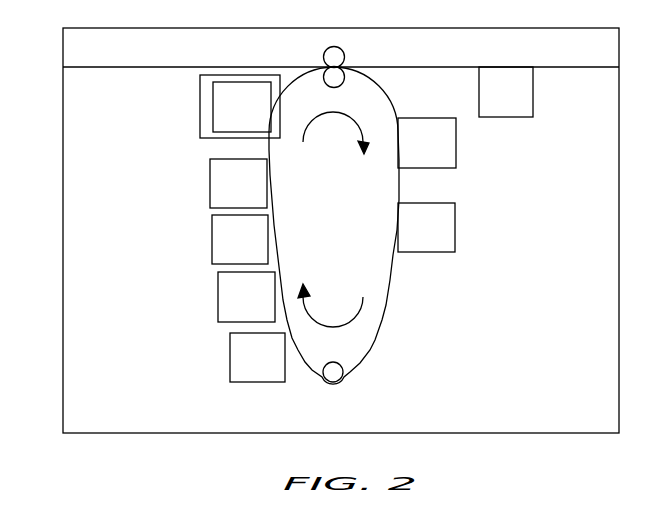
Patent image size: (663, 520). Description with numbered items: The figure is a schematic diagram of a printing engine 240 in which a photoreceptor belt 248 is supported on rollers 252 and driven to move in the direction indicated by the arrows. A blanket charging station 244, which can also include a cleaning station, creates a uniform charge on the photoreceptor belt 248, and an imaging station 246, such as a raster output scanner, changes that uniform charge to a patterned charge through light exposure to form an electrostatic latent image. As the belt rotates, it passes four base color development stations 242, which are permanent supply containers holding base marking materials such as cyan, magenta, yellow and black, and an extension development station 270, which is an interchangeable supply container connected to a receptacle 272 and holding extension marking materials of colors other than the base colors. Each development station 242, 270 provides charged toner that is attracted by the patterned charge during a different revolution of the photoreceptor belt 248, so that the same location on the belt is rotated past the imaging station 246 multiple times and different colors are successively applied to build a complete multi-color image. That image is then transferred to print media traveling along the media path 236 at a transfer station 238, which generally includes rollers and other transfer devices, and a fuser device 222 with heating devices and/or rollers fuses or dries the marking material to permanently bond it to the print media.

The fuser device 222 is at (533, 95).
The media path 236 is at (131, 74).
The transfer station 238 is at (314, 55).
The printing engine 240 is at (63, 220).
The development station 242 is at (210, 189).
The blanket charging station 244 is at (456, 145).
The imaging station 246 is at (455, 228).
The photoreceptor belt 248 is at (389, 298).
The rollers 252 is at (355, 82).
The extension development station 270 is at (258, 118).
The receptacle 272 is at (198, 107).